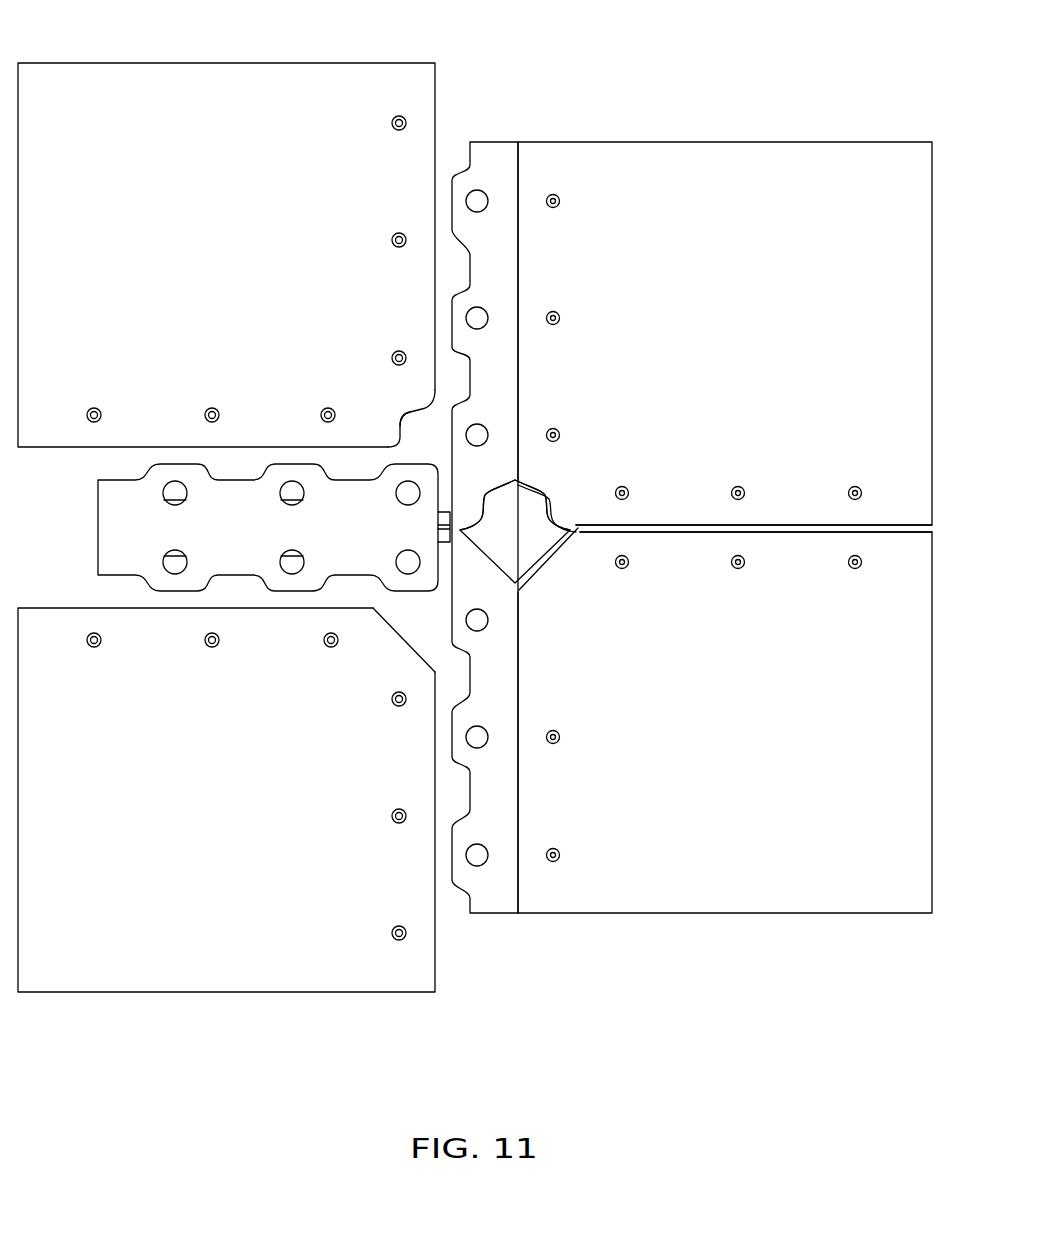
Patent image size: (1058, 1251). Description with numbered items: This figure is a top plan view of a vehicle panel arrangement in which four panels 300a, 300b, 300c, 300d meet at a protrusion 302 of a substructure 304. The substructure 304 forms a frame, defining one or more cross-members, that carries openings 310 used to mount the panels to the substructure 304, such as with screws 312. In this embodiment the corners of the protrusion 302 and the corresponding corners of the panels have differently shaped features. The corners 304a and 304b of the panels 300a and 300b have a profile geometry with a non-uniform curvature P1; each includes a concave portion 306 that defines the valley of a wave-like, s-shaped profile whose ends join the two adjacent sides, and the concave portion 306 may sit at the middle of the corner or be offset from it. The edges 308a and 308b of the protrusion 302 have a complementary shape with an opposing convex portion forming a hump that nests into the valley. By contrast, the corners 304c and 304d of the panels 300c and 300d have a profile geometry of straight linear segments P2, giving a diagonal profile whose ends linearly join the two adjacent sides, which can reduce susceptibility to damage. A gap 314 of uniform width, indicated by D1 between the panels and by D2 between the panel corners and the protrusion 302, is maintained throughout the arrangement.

The panel 300a is at (313, 63).
The panel 300b is at (776, 142).
The panel 300c is at (315, 992).
The panel 300d is at (790, 913).
The protrusion 302 is at (537, 532).
The substructure 304 is at (486, 142).
The corner 304a is at (403, 411).
The corner 304b is at (544, 480).
The corner 304c is at (392, 628).
The corner 304d is at (553, 558).
The concave portion 306 is at (402, 413).
The edge 308a is at (492, 492).
The edge 308b is at (553, 490).
The openings 310 is at (481, 210).
The screws 312 is at (560, 318).
The gap 314 is at (750, 519).
The non-uniform curvature P1 is at (395, 409).
The straight linear segments P2 is at (408, 656).
The gap width D1 is at (677, 490).
The gap width D2 is at (510, 553).